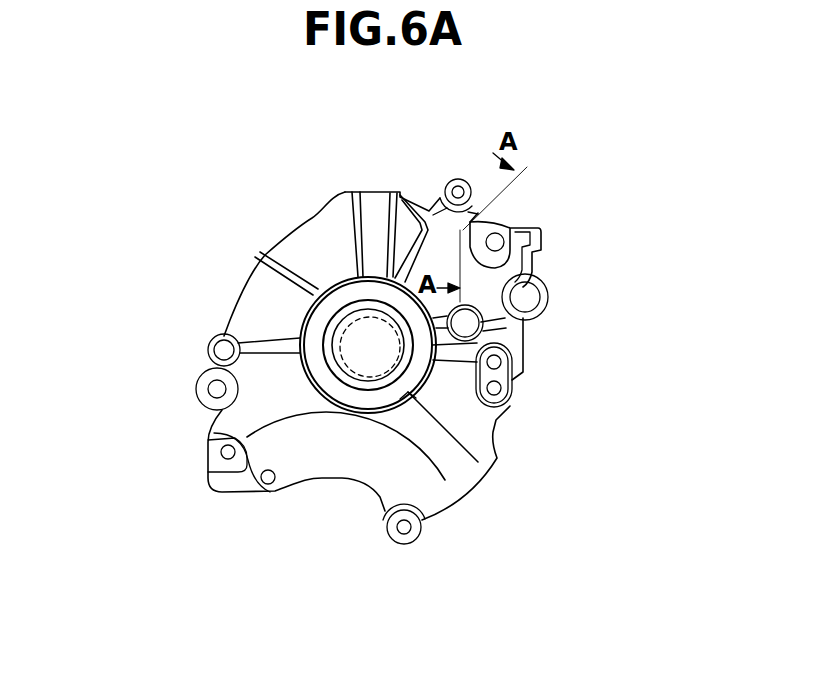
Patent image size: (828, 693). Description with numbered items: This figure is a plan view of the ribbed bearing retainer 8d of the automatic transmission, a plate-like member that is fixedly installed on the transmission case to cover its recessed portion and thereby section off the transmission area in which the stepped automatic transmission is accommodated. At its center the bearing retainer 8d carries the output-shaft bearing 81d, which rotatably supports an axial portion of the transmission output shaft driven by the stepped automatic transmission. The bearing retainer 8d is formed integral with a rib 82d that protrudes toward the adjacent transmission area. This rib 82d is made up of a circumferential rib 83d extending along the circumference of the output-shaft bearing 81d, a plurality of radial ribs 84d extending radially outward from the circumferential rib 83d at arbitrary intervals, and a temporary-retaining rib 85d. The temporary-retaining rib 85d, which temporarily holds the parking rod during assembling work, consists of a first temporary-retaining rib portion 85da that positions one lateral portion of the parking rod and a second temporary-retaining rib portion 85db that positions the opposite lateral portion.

The bearing retainer 8d is at (472, 483).
The output-shaft bearing 81d is at (356, 372).
The rib 82d is at (157, 113).
The circumferential rib 83d is at (297, 367).
The radial ribs 84d is at (468, 266).
The temporary-retaining rib 85d is at (238, 84).
The first temporary-retaining rib portion 85da is at (466, 252).
The second temporary-retaining rib portion 85db is at (432, 232).